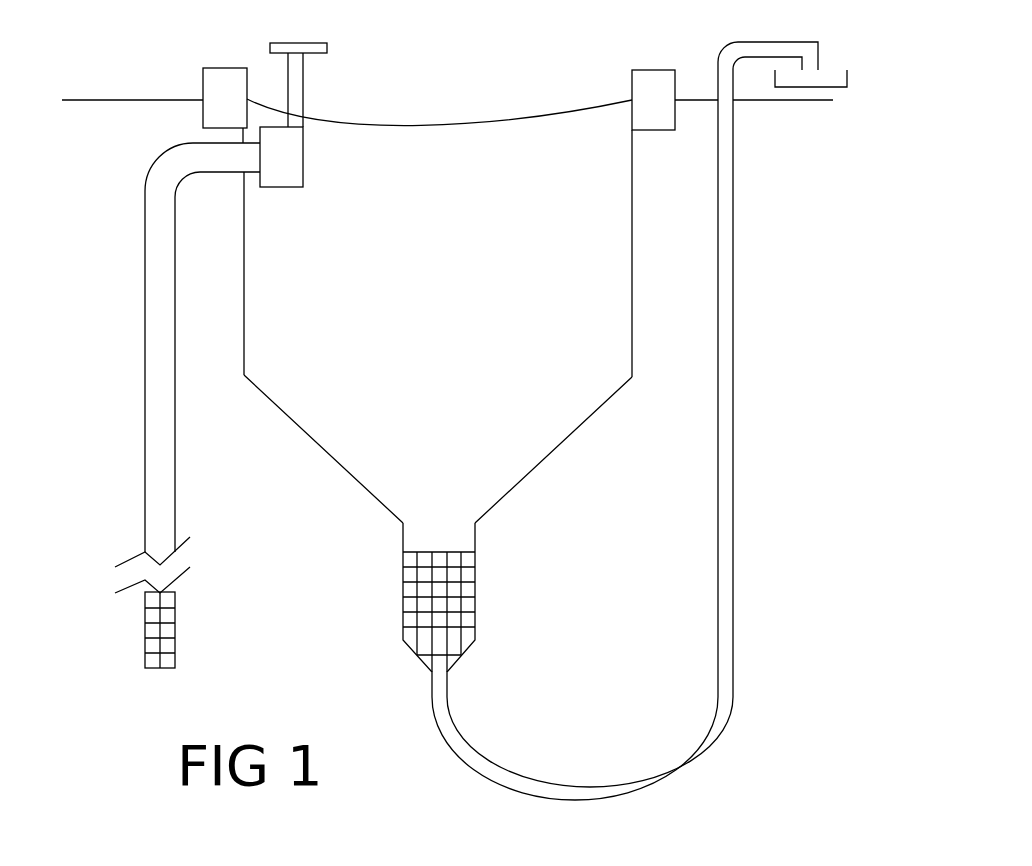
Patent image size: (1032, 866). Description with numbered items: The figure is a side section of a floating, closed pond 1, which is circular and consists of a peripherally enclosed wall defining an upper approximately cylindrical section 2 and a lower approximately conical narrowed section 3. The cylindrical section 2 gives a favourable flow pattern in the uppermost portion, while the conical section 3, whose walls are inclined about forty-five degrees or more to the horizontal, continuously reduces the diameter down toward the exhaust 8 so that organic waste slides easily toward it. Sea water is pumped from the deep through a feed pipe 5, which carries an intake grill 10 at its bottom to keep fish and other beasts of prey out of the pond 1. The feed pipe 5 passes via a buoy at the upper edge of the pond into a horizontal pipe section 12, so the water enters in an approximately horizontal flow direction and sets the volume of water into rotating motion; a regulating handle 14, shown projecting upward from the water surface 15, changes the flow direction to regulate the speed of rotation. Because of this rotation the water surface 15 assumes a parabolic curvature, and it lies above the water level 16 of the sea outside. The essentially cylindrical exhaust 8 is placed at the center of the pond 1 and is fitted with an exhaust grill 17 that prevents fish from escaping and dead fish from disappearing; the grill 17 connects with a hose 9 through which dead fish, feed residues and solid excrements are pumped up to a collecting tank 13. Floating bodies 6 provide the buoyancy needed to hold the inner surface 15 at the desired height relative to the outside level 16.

The floating closed pond 1 is at (244, 245).
The upper cylindrical section 2 is at (632, 235).
The lower conical section 3 is at (602, 408).
The feed pipe 5 is at (160, 420).
The floating bodies 6 is at (218, 83).
The exhaust 8 is at (485, 610).
The hose 9 is at (733, 657).
The intake grill 10 is at (160, 637).
The horizontal pipe section 12 is at (197, 152).
The collecting tank 13 is at (847, 48).
The regulating handle 14 is at (305, 97).
The water surface within the pond 15 is at (433, 127).
The water level of the sea outside 16 is at (705, 98).
The exhaust grill 17 is at (458, 597).